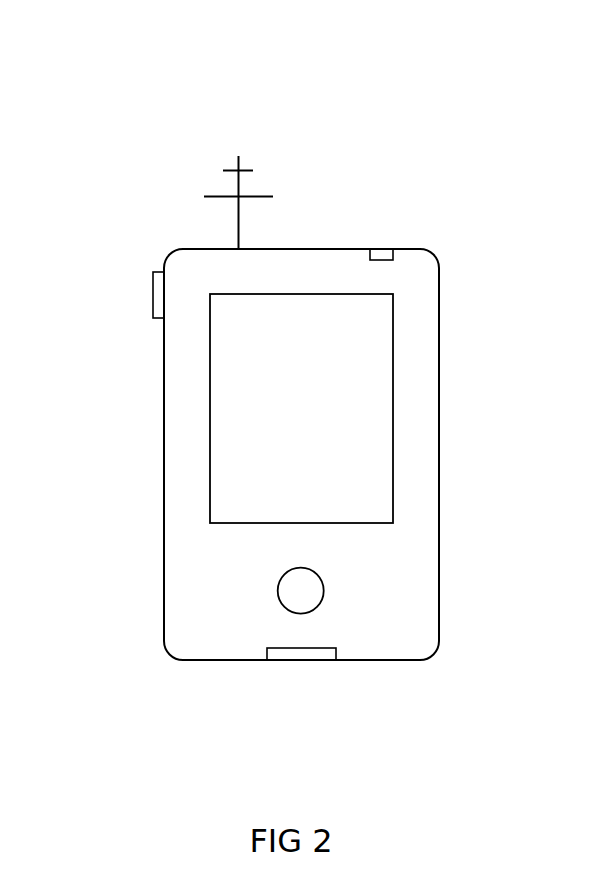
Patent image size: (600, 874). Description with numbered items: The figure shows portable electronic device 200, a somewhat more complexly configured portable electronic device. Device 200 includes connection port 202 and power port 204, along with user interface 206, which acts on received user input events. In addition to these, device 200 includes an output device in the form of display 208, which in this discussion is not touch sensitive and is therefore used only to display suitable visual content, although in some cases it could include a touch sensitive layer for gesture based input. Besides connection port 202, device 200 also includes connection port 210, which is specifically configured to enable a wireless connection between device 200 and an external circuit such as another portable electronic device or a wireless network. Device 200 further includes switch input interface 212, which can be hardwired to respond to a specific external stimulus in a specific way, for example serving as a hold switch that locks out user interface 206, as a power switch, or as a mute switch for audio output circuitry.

The portable electronic device 200 is at (151, 201).
The connection port 202 is at (382, 248).
The power port 204 is at (302, 662).
The user interface 206 is at (302, 596).
The display 208 is at (301, 408).
The connection port 210 is at (238, 128).
The switch input interface 212 is at (151, 293).